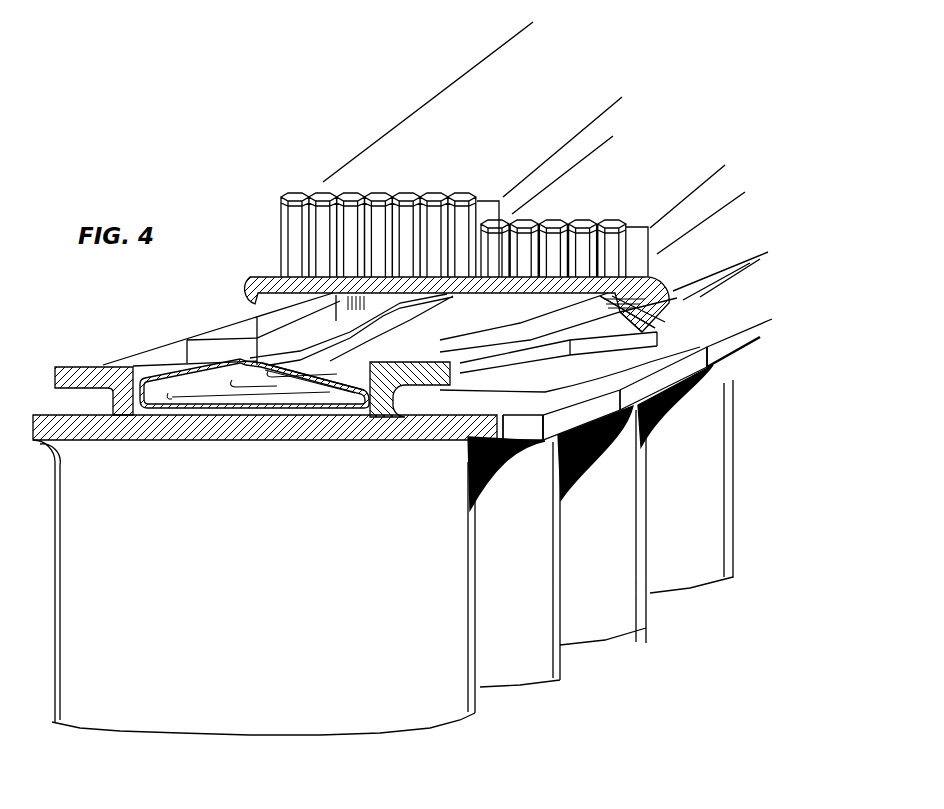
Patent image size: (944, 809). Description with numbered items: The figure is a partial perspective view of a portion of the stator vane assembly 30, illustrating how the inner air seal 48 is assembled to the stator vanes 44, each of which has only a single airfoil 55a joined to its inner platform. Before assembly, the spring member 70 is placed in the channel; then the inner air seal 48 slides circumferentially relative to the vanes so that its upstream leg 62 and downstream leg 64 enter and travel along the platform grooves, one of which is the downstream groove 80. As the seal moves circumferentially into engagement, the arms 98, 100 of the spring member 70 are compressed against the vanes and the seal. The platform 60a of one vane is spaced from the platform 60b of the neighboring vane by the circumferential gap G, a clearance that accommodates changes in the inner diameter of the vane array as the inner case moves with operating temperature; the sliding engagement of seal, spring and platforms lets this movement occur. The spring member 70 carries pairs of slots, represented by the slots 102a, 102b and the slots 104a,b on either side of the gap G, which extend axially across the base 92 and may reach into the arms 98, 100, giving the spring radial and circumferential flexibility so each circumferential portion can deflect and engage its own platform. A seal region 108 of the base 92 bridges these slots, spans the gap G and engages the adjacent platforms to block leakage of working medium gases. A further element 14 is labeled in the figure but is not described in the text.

The stator vane assembly 30 is at (170, 307).
The inner air seal 48 is at (263, 254).
The upstream leg 62 is at (244, 298).
The spring member 70 is at (341, 334).
The arm 98 is at (308, 348).
The slots 104a,b is at (357, 351).
The downstream leg 64 is at (660, 313).
The flange 14 is at (100, 403).
The stator vanes 44 is at (133, 695).
The downstream groove 80 is at (408, 410).
The base 92 is at (227, 410).
The arm 100 is at (328, 364).
The seal region 108 is at (322, 383).
The slot 102a is at (275, 388).
The slot 102b is at (284, 388).
The airfoil 55a is at (416, 586).
The platform 60a is at (614, 427).
The platform 60b is at (530, 446).
The circumferential gap G is at (501, 415).